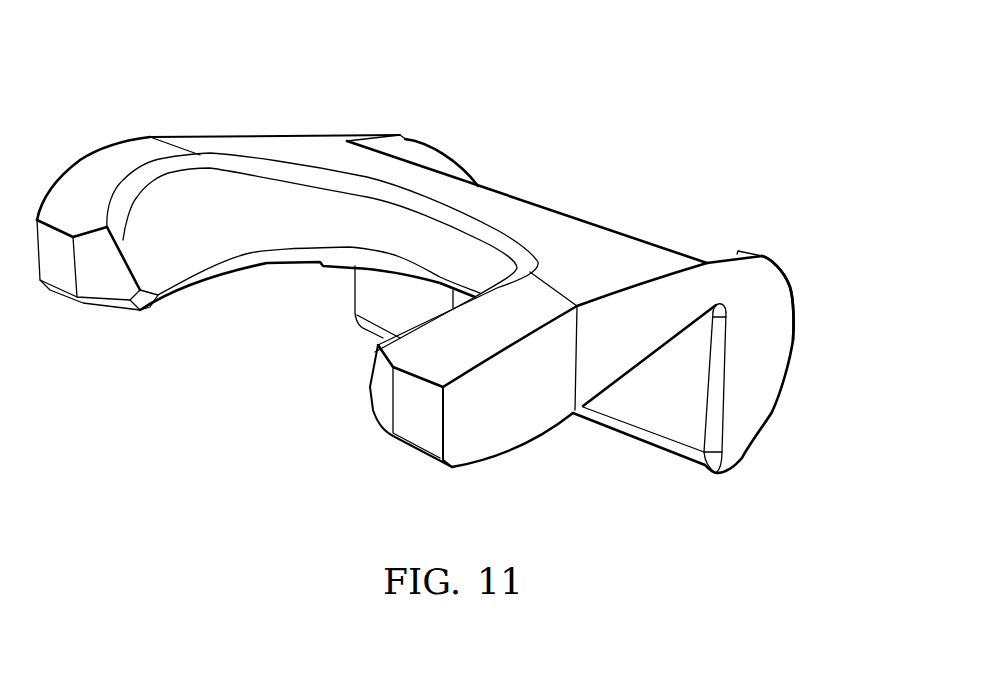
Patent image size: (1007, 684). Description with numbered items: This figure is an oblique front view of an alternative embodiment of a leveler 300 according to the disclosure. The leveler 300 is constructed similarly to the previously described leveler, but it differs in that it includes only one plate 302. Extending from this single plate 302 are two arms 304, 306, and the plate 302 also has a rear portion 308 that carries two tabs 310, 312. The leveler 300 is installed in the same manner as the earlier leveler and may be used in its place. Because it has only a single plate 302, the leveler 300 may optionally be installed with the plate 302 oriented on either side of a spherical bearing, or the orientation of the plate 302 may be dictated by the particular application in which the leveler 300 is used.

The leveler 300 is at (449, 267).
The plate 302 is at (207, 130).
The arm 304 is at (70, 298).
The arm 306 is at (440, 466).
The rear portion 308 is at (719, 362).
The tab 310 is at (448, 150).
The tab 312 is at (795, 291).